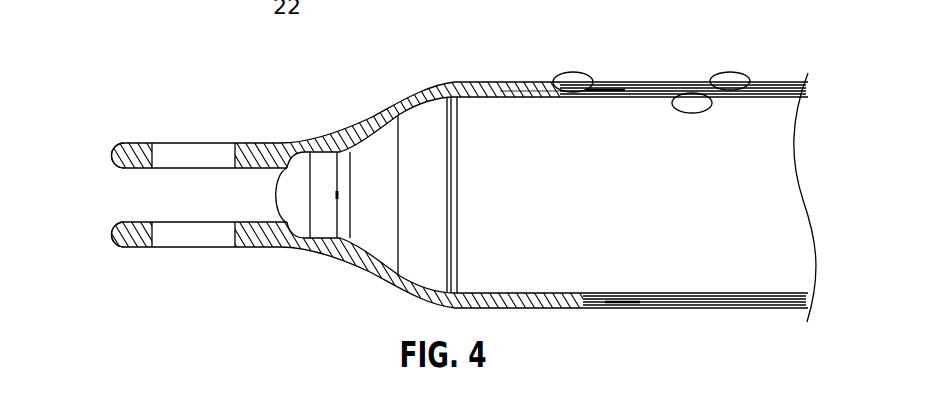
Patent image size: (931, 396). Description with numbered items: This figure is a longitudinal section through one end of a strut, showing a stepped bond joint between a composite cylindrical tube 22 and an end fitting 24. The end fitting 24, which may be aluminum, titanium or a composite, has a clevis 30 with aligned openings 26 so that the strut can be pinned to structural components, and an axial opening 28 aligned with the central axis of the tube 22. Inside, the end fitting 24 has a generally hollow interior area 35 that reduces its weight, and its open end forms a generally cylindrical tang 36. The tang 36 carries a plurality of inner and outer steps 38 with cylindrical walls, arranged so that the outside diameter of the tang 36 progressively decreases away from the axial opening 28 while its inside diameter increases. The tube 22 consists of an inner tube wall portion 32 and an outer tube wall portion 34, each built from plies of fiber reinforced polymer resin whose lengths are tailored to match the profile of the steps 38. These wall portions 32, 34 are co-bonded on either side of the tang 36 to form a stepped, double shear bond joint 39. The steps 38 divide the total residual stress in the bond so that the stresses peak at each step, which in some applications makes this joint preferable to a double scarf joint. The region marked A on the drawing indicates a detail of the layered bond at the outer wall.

The cylindrical tube 22 is at (812, 86).
The end fitting 24 is at (328, 139).
The aligned openings 26 is at (200, 162).
The axial opening 28 is at (135, 193).
The clevis 30 is at (123, 155).
The inner tube wall portion 32 is at (692, 114).
The outer tube wall portion 34 is at (730, 72).
The interior area 35 is at (378, 156).
The tang 36 is at (465, 82).
The inner and outer steps 38 is at (503, 80).
The stepped, double shear bond joint 39 is at (552, 102).
The detail region A is at (590, 78).